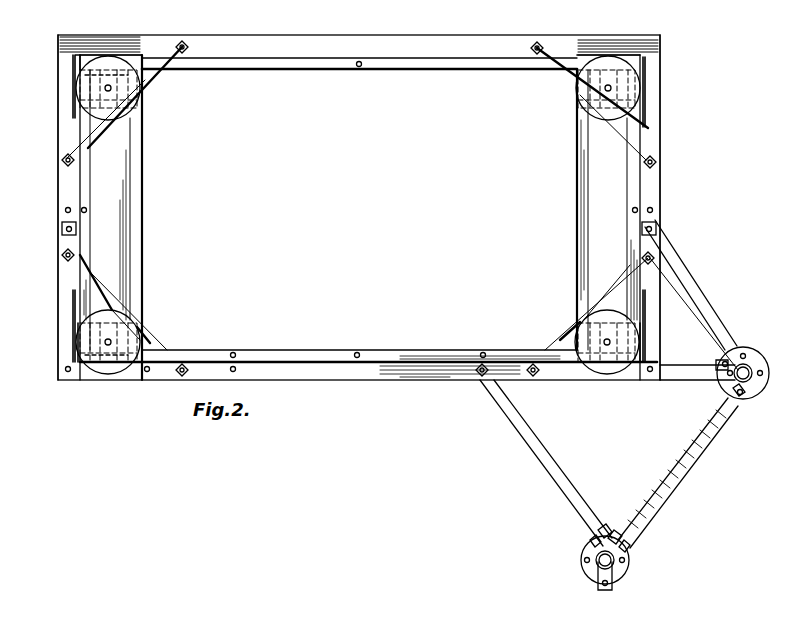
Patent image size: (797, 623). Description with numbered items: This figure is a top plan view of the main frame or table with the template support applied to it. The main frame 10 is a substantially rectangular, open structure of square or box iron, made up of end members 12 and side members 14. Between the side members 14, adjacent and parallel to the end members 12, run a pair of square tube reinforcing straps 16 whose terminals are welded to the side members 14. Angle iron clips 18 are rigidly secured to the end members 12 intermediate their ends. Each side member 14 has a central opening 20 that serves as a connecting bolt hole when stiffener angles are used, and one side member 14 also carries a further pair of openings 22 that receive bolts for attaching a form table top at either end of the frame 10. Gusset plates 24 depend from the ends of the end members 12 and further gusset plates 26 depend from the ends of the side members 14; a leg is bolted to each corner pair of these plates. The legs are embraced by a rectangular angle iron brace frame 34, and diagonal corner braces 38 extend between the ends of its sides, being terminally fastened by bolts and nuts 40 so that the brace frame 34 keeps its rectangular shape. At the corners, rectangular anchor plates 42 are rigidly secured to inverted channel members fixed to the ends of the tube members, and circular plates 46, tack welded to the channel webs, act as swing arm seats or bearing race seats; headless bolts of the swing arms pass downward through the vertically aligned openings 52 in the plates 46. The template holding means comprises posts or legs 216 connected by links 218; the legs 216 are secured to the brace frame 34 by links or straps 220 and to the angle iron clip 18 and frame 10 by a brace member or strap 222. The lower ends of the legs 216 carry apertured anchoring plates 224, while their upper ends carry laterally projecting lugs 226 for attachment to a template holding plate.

The frame 10 is at (392, 345).
The end members 12 is at (85, 243).
The side member 14 is at (416, 72).
The reinforcing straps 16 is at (136, 178).
The angle iron clips 18 is at (62, 230).
The openings 20 is at (359, 67).
The openings 22 is at (232, 352).
The gusset plates 24 is at (73, 105).
The gusset plates 26 is at (87, 55).
The brace frame 34 is at (358, 44).
The diagonal corner braces 38 is at (151, 80).
The bolts and nuts 40 is at (184, 45).
The anchor plates 42 is at (76, 78).
The circular plates 46 is at (122, 115).
The openings 52 is at (105, 88).
The legs 216 is at (598, 563).
The links 218 is at (673, 484).
The links or straps 220 is at (705, 305).
The brace member 222 is at (718, 331).
The anchoring plates 224 is at (626, 570).
The lugs 226 is at (603, 586).